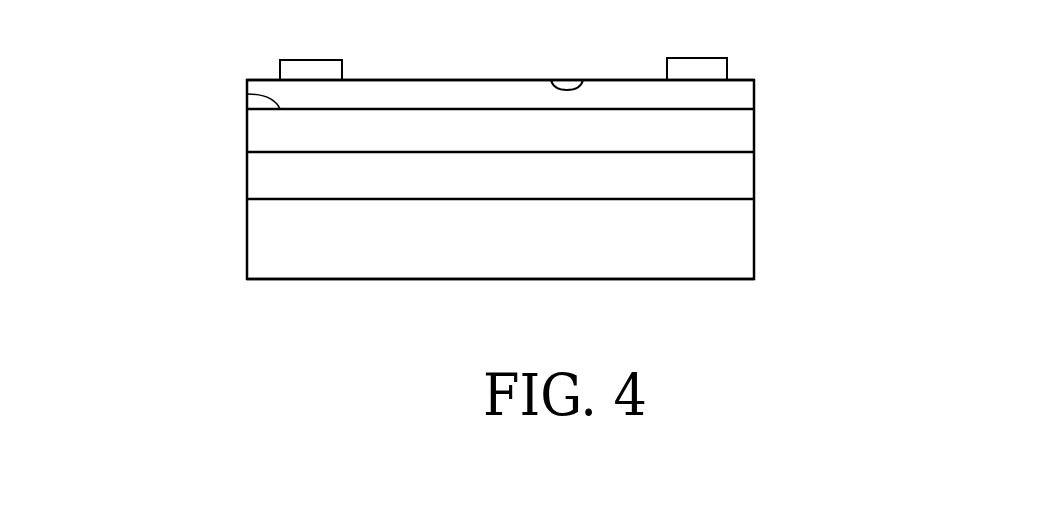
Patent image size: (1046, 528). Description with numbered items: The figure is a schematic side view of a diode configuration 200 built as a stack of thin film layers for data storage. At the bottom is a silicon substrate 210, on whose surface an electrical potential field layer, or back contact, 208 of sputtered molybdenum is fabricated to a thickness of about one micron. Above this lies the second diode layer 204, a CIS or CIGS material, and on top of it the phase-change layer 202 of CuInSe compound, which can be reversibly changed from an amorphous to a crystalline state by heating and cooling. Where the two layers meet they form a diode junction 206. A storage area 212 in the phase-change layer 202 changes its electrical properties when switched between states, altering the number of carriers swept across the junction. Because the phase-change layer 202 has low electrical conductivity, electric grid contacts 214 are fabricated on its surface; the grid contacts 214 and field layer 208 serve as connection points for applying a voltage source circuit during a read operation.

The diode configuration 200 is at (135, 115).
The phase-change layer 202 is at (754, 98).
The second diode layer 204 is at (754, 130).
The diode junction 206 is at (247, 94).
The electrical potential field layer 208 is at (754, 170).
The silicon substrate 210 is at (754, 231).
The storage area 212 is at (569, 78).
The electric grid contacts 214 is at (312, 60).